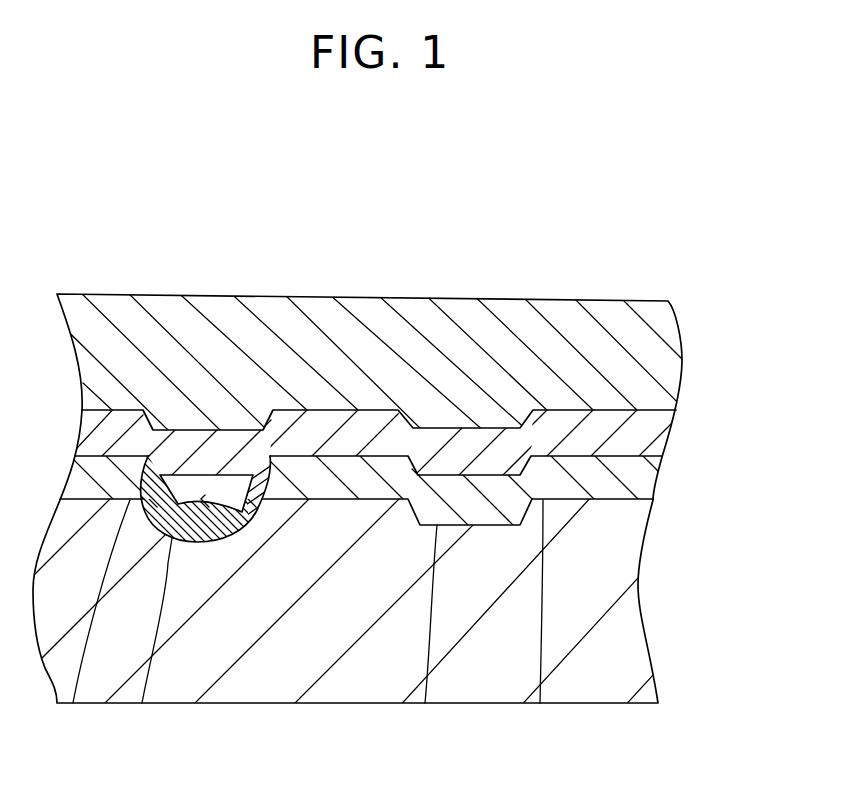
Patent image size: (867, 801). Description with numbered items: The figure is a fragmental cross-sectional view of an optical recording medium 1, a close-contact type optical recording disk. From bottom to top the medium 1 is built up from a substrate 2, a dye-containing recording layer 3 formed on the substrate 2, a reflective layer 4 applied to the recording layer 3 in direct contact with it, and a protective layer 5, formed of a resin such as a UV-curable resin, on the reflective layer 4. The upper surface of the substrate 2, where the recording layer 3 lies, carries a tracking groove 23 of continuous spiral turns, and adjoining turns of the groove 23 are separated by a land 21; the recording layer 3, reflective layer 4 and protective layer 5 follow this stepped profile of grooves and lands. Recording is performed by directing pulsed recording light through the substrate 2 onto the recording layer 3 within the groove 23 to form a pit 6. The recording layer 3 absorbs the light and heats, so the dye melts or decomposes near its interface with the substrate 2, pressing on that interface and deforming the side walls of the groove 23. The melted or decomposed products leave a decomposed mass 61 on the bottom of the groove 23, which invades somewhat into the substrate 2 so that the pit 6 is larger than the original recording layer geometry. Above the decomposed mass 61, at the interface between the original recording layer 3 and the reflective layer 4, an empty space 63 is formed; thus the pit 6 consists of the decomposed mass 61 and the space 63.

The optical recording medium 1 is at (432, 280).
The substrate 2 is at (625, 633).
The land 21 is at (73, 703).
The groove 23 is at (142, 703).
The recording layer 3 is at (643, 482).
The reflective layer 4 is at (655, 427).
The protective layer 5 is at (673, 362).
The pit 6 is at (267, 523).
The decomposed mass 61 is at (208, 533).
The empty space 63 is at (233, 525).